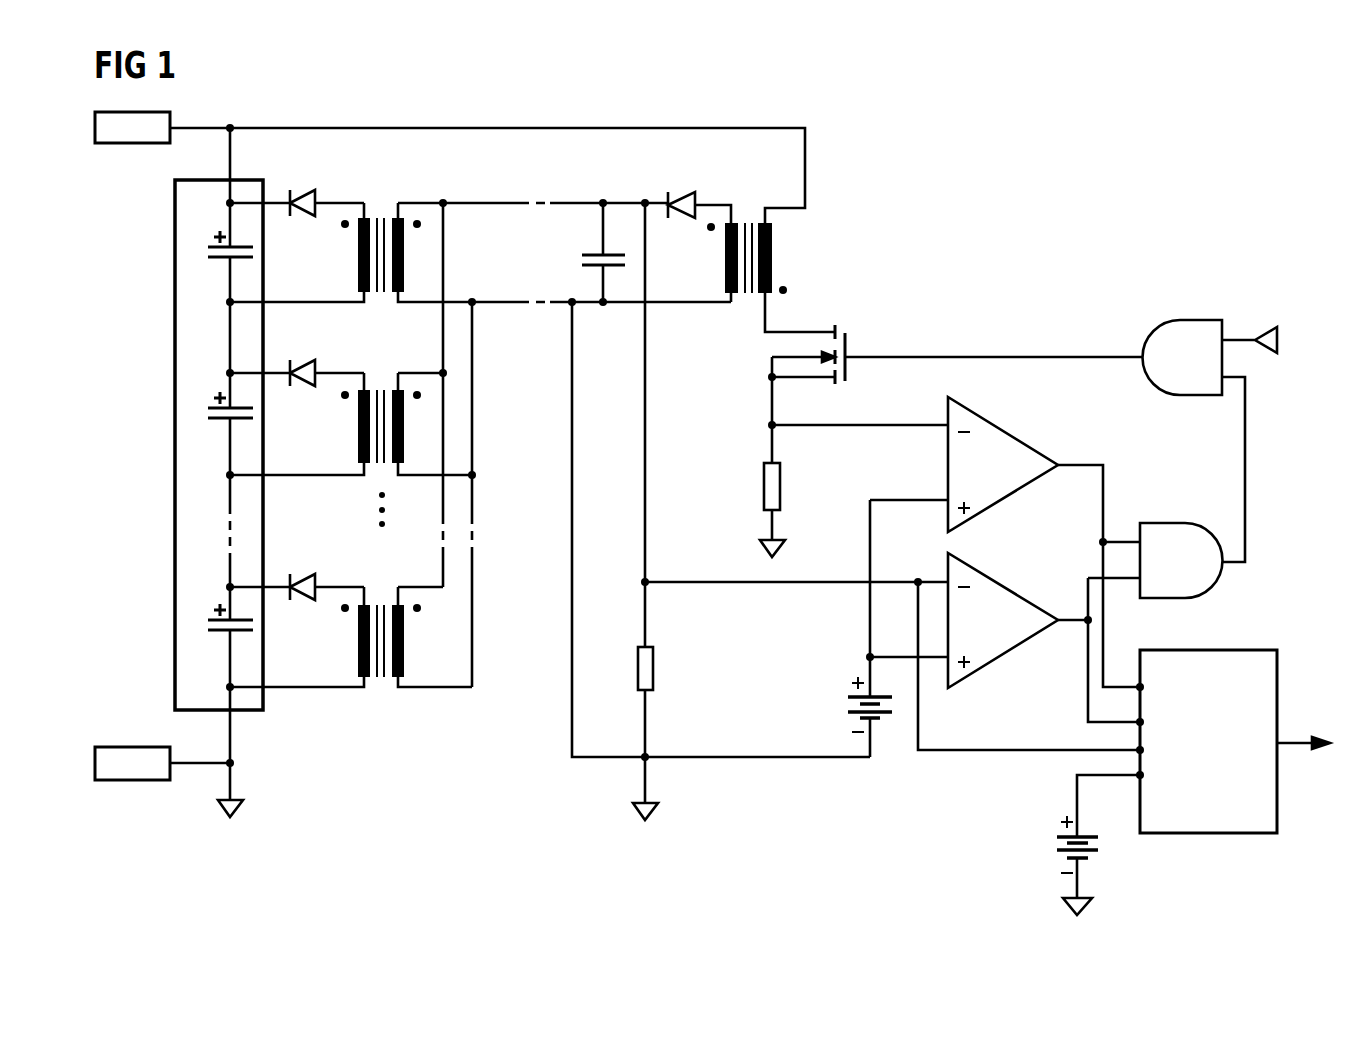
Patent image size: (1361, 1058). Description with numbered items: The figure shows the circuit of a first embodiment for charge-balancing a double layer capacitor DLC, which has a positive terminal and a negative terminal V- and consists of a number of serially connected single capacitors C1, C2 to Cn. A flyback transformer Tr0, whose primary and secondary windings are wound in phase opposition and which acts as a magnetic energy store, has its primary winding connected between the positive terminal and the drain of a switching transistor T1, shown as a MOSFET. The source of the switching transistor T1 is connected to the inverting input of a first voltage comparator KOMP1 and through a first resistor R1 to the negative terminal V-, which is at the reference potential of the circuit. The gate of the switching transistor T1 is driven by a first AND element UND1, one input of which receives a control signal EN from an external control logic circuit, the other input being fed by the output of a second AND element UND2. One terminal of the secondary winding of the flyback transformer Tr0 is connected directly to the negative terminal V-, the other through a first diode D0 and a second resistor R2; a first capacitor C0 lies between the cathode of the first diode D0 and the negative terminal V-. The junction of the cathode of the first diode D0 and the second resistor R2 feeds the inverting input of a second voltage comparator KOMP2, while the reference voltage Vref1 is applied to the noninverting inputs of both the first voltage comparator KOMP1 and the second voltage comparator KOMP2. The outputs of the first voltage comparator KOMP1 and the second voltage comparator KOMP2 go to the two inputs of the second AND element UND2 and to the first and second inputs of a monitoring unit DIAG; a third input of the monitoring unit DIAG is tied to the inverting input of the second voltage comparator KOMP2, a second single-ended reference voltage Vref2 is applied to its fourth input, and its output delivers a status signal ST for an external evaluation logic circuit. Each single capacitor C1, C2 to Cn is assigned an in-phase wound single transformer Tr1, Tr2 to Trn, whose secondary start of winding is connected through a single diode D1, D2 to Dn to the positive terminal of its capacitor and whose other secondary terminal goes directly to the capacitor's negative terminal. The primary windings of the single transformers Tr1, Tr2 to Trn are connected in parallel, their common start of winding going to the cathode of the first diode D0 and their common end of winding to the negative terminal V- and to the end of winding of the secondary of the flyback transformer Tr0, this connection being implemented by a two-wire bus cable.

The negative terminal V- is at (162, 763).
The double layer capacitor DLC is at (175, 416).
The single capacitor C1 is at (226, 260).
The single capacitor C2 is at (226, 421).
The single capacitor Cn is at (226, 633).
The single diode D1 is at (306, 216).
The single diode D2 is at (306, 386).
The single diode Dn is at (306, 600).
The single transformer Tr1 is at (380, 220).
The single transformer Tr2 is at (380, 390).
The single transformer Trn is at (380, 605).
The first capacitor C0 is at (585, 262).
The first diode D0 is at (684, 218).
The flyback transformer Tr0 is at (748, 222).
The switching transistor T1 is at (845, 343).
The first resistor R1 is at (780, 490).
The second resistor R2 is at (653, 670).
The first voltage comparator KOMP1 is at (1005, 542).
The second voltage comparator KOMP2 is at (892, 637).
The first AND element UND1 is at (1194, 441).
The second AND element UND2 is at (1155, 560).
The monitoring unit DIAG is at (1206, 741).
The control signal EN is at (1268, 342).
The status signal ST is at (1303, 730).
The reference voltage Vref1 is at (840, 628).
The second single-ended reference voltage Vref2 is at (1065, 845).